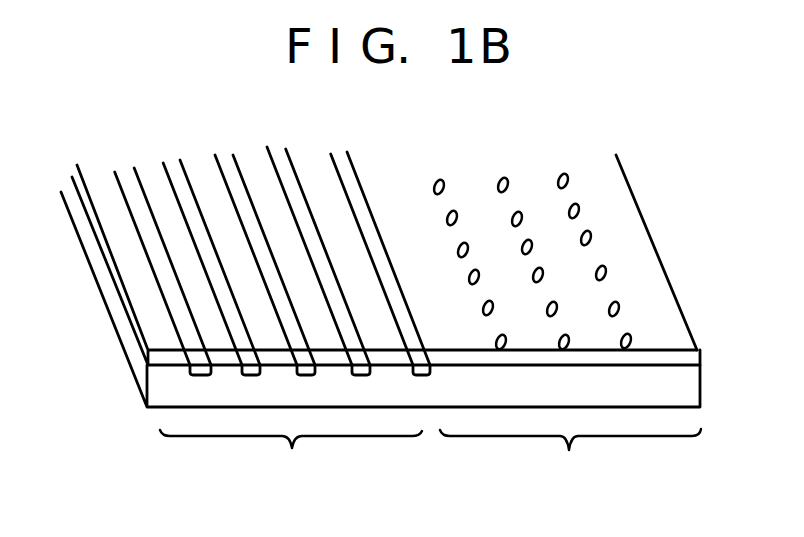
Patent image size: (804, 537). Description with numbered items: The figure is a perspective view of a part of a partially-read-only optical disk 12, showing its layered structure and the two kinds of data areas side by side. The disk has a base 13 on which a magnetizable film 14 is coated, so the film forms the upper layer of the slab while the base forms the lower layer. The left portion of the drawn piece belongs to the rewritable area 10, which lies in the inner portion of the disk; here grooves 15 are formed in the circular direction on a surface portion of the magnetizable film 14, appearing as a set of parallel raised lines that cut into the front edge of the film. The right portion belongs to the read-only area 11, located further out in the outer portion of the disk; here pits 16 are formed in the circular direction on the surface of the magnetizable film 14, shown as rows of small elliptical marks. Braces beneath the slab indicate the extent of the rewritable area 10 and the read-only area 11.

The rewritable area 10 is at (272, 295).
The read-only area 11 is at (545, 333).
The partially-read-only optical disk 12 is at (674, 256).
The base 13 is at (687, 388).
The magnetizable film 14 is at (690, 358).
The grooves 15 is at (142, 213).
The pits 16 is at (457, 249).